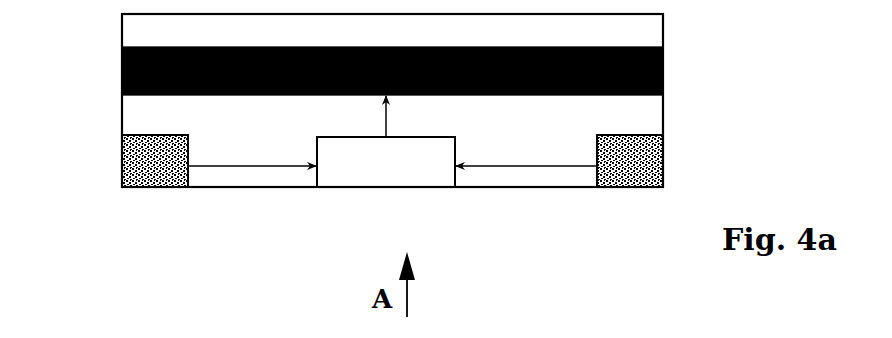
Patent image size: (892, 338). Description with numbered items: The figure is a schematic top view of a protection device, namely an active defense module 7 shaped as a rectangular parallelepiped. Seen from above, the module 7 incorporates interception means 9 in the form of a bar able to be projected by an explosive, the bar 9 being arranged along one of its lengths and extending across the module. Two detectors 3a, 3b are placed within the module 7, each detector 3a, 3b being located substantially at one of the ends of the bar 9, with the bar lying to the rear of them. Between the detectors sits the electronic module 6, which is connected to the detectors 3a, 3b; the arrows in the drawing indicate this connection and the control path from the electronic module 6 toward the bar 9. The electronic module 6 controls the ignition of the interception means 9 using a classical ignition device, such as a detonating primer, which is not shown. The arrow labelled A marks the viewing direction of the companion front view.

The active defense module 7 is at (122, 225).
The interception means 9 is at (122, 65).
The electronic module 6 is at (392, 141).
The detector 3a is at (162, 177).
The detector 3b is at (636, 160).